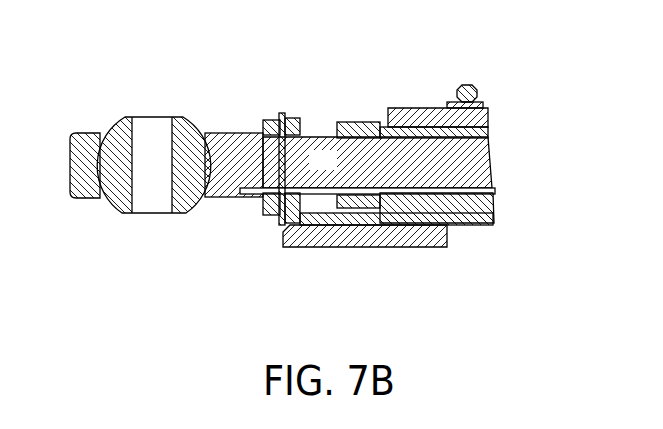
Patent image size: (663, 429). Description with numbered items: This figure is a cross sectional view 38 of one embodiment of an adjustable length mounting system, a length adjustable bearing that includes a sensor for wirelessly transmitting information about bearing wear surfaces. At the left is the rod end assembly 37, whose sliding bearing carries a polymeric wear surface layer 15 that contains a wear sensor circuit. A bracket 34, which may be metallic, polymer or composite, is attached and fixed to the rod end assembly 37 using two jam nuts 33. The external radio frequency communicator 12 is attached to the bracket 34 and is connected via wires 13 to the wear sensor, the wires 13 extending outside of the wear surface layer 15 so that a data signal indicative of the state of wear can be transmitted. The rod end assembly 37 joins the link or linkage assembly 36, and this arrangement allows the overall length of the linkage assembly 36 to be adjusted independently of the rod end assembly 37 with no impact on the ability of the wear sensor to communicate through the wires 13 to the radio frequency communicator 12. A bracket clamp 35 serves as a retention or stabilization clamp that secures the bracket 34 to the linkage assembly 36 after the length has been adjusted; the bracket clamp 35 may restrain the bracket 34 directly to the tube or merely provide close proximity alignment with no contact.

The radio frequency communicator 12 is at (362, 238).
The connecting wires 13 is at (227, 200).
The polymeric wear surface layer 15 is at (182, 212).
The jam nuts 33 is at (268, 117).
The bracket 34 is at (283, 117).
The bracket clamp 35 is at (465, 92).
The link or linkage assembly 36 is at (495, 191).
The rod end assembly 37 is at (334, 172).
The cross sectional view 38 is at (44, 172).